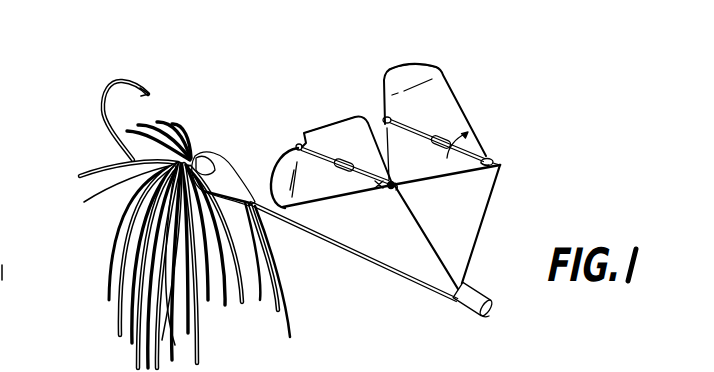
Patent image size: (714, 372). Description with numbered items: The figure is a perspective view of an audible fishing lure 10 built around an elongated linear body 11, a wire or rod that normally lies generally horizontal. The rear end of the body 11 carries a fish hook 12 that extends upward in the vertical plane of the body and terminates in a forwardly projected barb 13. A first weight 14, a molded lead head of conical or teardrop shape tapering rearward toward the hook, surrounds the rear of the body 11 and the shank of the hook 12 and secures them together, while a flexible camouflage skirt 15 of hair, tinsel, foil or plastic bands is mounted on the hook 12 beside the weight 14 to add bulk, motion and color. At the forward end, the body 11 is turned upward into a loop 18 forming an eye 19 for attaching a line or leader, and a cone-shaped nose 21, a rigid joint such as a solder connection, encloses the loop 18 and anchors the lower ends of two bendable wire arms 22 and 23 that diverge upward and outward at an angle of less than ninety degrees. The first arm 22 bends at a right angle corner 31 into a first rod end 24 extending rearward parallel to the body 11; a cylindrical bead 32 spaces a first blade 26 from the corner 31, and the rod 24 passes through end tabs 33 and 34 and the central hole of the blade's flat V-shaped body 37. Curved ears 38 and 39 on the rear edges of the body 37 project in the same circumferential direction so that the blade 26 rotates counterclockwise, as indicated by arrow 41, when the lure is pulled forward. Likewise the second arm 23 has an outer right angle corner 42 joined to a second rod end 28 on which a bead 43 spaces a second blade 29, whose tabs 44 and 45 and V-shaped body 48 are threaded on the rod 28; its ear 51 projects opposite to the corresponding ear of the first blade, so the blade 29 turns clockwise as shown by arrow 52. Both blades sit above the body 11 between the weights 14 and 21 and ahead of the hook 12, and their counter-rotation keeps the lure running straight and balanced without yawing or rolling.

The audible fishing lure 10 is at (490, 55).
The elongated linear body 11 is at (373, 265).
The fish hook 12 is at (102, 105).
The barb 13 is at (148, 89).
The first weight 14 is at (220, 172).
The flexible camouflage skirt 15 is at (102, 228).
The loop 18 is at (495, 307).
The eye 19 is at (485, 318).
The nose 21 is at (473, 288).
The first arm 22 is at (432, 252).
The second arm 23 is at (493, 207).
The first rod end 24 is at (314, 139).
The first blade 26 is at (343, 203).
The second rod end 28 is at (452, 122).
The second blade 29 is at (443, 76).
The right angle corner 31 is at (404, 191).
The cylindrical bead 32 is at (393, 192).
The end tab 33 is at (390, 190).
The end tab 34 is at (297, 143).
The V-shaped body 37 is at (323, 190).
The ear 38 is at (283, 180).
The ear 39 is at (337, 120).
The arrow 41 is at (356, 180).
The outer right angle corner 42 is at (500, 165).
The bead 43 is at (491, 160).
The tab 44 is at (482, 168).
The tab 45 is at (385, 116).
The V-shaped body 48 is at (468, 124).
The ear 51 is at (408, 72).
The arrow 52 is at (450, 157).